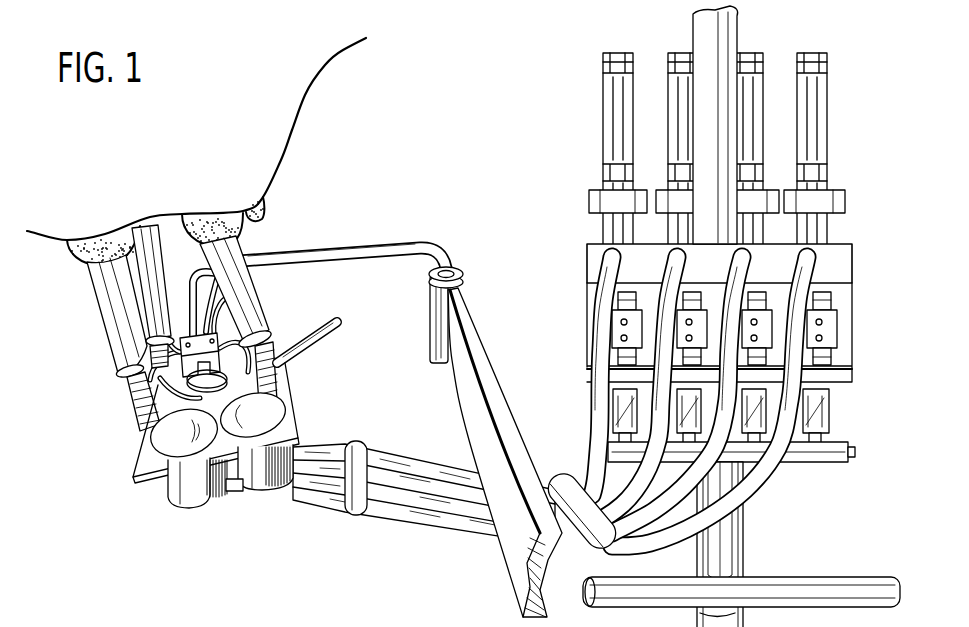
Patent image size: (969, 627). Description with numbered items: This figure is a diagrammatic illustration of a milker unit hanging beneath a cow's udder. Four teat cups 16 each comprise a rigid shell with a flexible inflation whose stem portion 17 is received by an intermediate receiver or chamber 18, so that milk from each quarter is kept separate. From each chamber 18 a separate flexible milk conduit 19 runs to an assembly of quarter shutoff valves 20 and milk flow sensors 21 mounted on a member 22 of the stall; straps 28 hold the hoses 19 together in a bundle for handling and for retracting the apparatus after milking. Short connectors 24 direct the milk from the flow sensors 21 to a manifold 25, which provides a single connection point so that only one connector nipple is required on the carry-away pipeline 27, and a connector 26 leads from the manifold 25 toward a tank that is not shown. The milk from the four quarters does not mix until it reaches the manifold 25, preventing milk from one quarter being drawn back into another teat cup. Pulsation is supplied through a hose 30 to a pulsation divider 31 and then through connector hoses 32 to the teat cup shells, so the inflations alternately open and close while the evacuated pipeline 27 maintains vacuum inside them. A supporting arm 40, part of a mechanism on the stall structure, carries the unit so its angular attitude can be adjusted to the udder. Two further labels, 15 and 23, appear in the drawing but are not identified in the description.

The claw 15 is at (333, 391).
The teat cups 16 is at (103, 298).
The stem portion 17 is at (130, 390).
The intermediate receiver or chamber 18 is at (183, 480).
The milk conduits 19 is at (316, 483).
The shutoff valves 20 is at (556, 242).
The milk flow sensors 21 is at (569, 340).
The member of the stall 22 is at (727, 32).
The base 23 is at (745, 620).
The short connectors 24 is at (830, 410).
The manifold 25 is at (830, 457).
The connector 26 is at (727, 548).
The pipeline 27 is at (816, 578).
The straps 28 is at (357, 443).
The hose 30 is at (311, 322).
The pulsation divider 31 is at (213, 456).
The connector hoses 32 is at (175, 326).
The supporting arm 40 is at (320, 254).